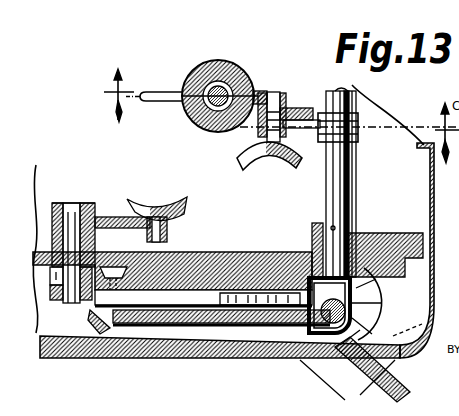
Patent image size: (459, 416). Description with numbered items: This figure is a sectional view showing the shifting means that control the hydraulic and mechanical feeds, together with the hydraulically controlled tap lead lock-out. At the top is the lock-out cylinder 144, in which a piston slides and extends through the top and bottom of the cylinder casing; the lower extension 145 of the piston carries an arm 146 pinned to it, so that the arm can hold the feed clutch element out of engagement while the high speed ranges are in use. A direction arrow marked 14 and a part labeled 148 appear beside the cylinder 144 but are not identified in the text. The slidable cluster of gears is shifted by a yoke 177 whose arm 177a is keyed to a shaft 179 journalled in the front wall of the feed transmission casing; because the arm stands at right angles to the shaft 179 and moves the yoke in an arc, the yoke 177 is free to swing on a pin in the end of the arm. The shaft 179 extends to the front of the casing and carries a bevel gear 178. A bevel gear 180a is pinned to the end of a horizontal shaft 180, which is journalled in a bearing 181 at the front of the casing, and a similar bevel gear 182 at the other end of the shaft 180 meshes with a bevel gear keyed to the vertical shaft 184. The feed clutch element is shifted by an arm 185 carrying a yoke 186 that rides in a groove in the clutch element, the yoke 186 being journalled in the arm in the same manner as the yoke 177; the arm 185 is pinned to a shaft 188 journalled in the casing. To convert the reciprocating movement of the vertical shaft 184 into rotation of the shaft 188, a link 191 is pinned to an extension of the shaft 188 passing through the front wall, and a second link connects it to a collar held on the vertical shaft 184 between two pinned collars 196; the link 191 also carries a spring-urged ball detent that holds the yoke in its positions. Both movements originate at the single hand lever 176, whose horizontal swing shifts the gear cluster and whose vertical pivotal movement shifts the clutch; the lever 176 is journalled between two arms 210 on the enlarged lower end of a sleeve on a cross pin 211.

The direction arrow 14 is at (120, 83).
The cylinder 144 is at (200, 70).
The lower extension of the piston 145 is at (256, 90).
The arm 146 is at (271, 101).
The shaft 148 is at (176, 100).
The arm 185 is at (312, 108).
The shaft 188 is at (340, 156).
The yoke 186 is at (272, 158).
The hand lever 176 is at (398, 368).
The shaft 179 is at (72, 214).
The arm of the yoke 177a is at (117, 217).
The yoke 177 is at (158, 240).
The link 191 is at (302, 270).
The vertical shaft 184 is at (376, 306).
The horizontal shaft 180 is at (148, 330).
The bevel gear 180a is at (92, 335).
The bevel gear 178 is at (56, 300).
The bearing 181 is at (200, 336).
The bevel gear 182 is at (300, 338).
The pinned collars 196 is at (337, 345).
The arms 210 is at (368, 396).
The cross pin 211 is at (422, 326).